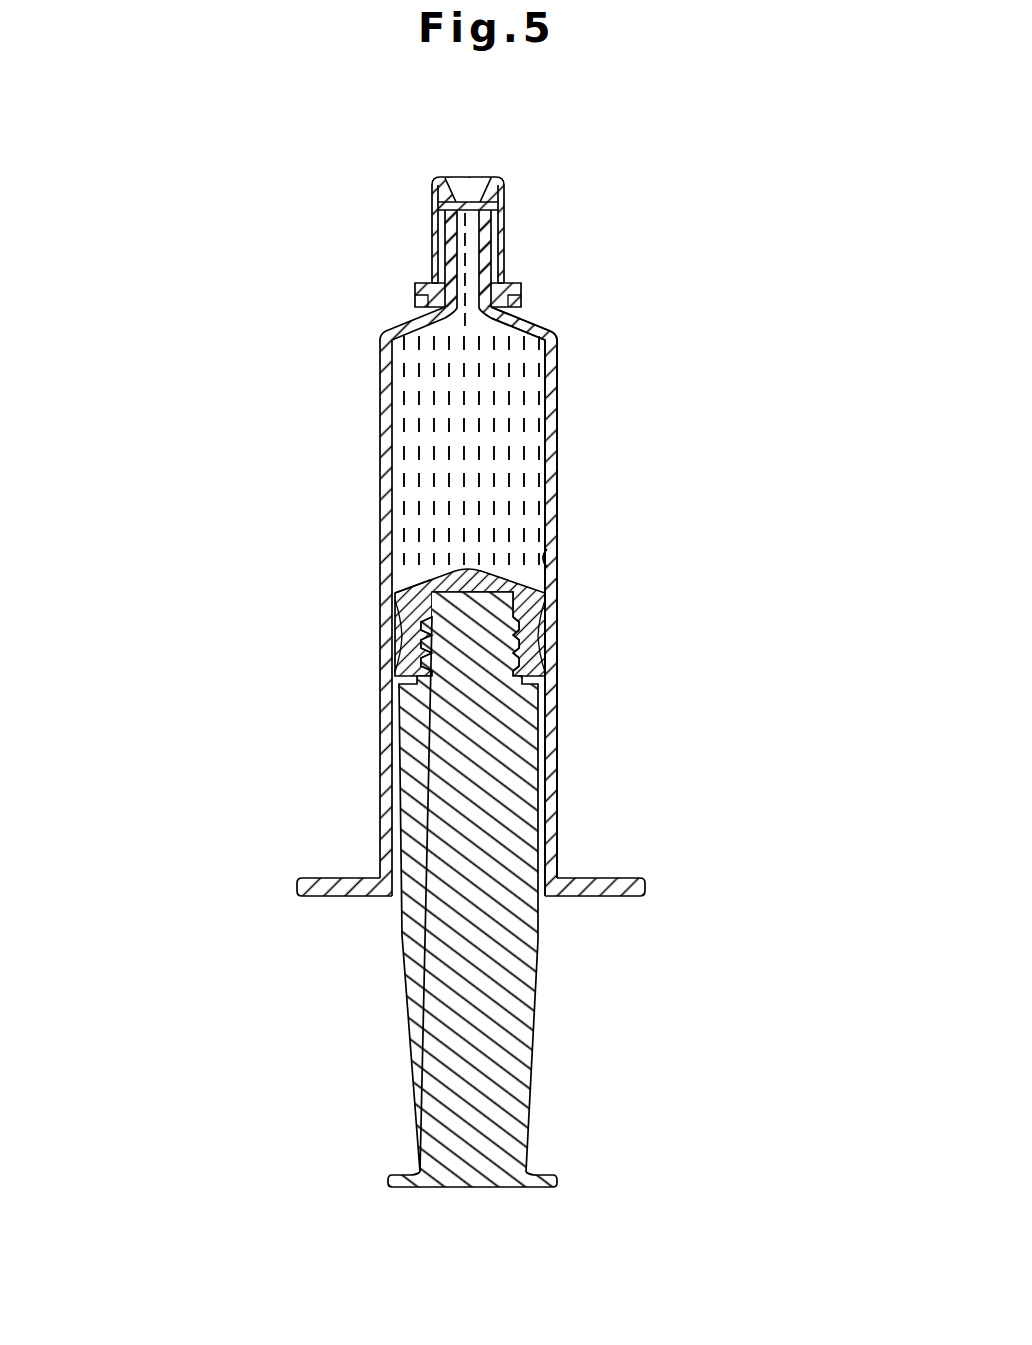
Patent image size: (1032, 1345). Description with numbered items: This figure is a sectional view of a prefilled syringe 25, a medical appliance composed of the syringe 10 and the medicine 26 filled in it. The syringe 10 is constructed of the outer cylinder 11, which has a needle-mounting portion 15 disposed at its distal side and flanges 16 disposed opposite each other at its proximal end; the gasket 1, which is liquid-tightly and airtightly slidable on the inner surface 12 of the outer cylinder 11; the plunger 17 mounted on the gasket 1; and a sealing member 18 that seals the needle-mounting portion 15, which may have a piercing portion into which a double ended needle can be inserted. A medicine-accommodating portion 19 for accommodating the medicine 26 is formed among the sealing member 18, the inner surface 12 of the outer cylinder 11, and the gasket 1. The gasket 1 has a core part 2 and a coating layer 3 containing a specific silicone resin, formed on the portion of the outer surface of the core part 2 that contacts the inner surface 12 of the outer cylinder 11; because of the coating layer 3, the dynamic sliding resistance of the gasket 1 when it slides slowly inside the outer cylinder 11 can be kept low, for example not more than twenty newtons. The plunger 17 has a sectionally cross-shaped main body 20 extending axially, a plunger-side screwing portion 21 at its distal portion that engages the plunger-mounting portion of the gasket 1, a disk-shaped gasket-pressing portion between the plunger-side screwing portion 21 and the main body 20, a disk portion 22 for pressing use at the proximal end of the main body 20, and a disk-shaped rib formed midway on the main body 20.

The gasket 1 is at (463, 616).
The core part 2 is at (392, 582).
The coating layer 3 is at (397, 618).
The syringe 10 is at (422, 553).
The outer cylinder 11 is at (552, 445).
The inner surface 12 is at (548, 548).
The needle-mounting portion 15 is at (432, 277).
The flanges 16 is at (322, 887).
The plunger 17 is at (477, 890).
The sealing member 18 is at (498, 183).
The medicine-accommodating portion 19 is at (411, 450).
The main body 20 is at (527, 792).
The plunger-side screwing portion 21 is at (402, 650).
The disk portion 22 is at (410, 1178).
The prefilled syringe 25 is at (568, 250).
The medicine 26 is at (432, 547).